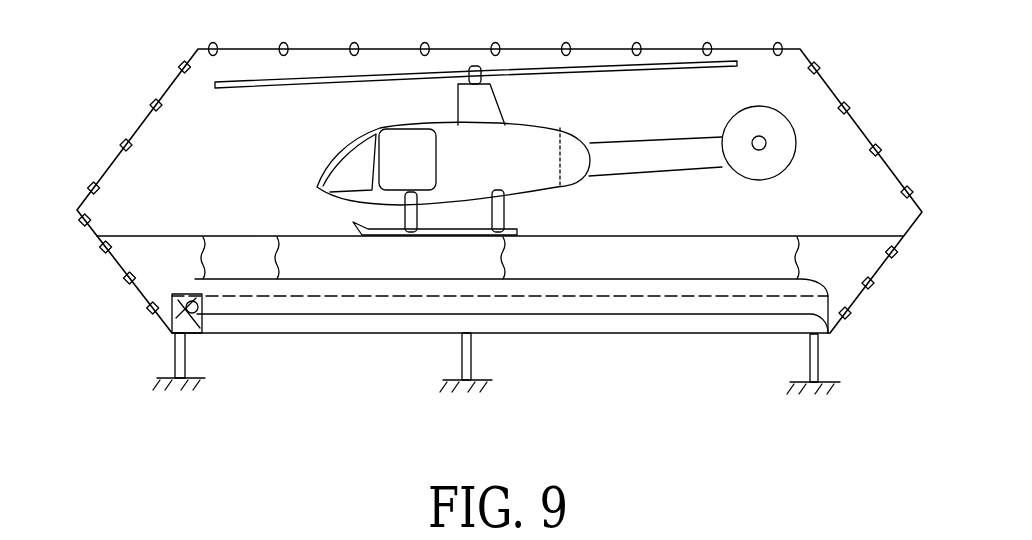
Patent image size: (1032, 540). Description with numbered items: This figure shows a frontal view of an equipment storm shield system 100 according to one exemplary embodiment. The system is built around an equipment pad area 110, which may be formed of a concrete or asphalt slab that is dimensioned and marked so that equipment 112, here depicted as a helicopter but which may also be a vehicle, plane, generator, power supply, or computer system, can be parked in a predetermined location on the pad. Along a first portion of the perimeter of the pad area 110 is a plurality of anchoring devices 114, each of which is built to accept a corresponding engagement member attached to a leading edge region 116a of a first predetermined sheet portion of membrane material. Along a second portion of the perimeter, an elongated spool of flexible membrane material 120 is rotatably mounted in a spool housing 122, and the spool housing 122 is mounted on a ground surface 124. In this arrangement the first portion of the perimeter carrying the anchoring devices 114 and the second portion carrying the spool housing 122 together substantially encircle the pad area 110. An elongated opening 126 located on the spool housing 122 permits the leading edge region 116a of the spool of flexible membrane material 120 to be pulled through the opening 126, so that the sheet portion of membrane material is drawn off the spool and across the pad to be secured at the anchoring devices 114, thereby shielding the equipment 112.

The equipment storm shield system 100 is at (480, 267).
The equipment pad area 110 is at (223, 155).
The equipment 112 is at (512, 172).
The anchoring devices 114 is at (104, 252).
The leading edge region 116a is at (278, 236).
The elongated spool of flexible membrane material 120 is at (200, 333).
The spool housing 122 is at (588, 334).
The ground surface 124 is at (457, 380).
The elongated opening 126 is at (176, 310).